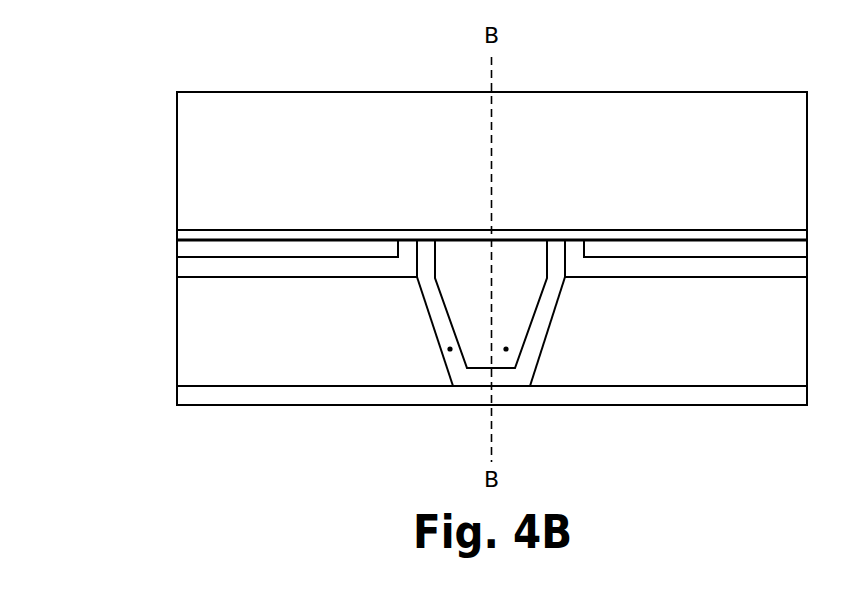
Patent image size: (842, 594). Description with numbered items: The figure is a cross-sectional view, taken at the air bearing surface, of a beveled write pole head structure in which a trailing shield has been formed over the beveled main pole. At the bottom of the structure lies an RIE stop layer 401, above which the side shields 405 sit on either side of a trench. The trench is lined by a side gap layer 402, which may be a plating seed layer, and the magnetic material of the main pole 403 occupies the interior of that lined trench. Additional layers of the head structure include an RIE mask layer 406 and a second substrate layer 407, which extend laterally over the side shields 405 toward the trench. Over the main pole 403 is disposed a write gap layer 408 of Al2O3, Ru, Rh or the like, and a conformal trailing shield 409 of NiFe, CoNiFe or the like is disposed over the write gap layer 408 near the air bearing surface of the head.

The RIE stop layer 401 is at (177, 397).
The side gap layer 402 is at (450, 349).
The main pole 403 is at (506, 349).
The side shields 405 is at (492, 331).
The RIE mask layer 406 is at (177, 267).
The second substrate layer 407 is at (177, 248).
The write gap layer 408 is at (177, 234).
The trailing shield 409 is at (492, 248).